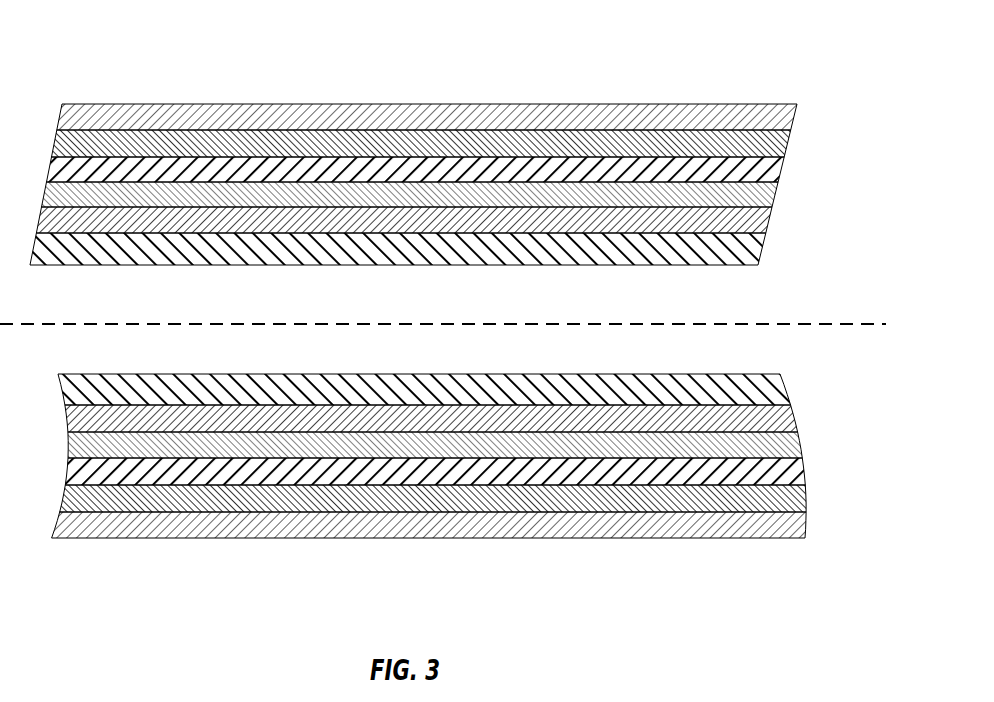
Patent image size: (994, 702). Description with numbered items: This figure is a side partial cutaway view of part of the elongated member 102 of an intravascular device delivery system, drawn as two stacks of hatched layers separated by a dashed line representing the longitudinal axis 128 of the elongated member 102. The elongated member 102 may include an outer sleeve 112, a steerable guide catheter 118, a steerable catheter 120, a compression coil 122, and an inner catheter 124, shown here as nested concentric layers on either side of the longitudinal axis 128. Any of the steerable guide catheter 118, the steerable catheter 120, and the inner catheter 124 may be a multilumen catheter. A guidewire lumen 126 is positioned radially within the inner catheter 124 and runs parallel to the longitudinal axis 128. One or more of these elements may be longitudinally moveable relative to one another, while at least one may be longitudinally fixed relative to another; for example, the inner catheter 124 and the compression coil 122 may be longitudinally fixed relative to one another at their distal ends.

The elongated member 102 is at (446, 269).
The outer sleeve 112 is at (772, 116).
The steerable catheter 120 is at (770, 167).
The inner catheter 124 is at (758, 212).
The longitudinal axis 128 is at (884, 323).
The guidewire lumen 126 is at (770, 389).
The compression coil 122 is at (785, 444).
The steerable guide catheter 118 is at (805, 495).